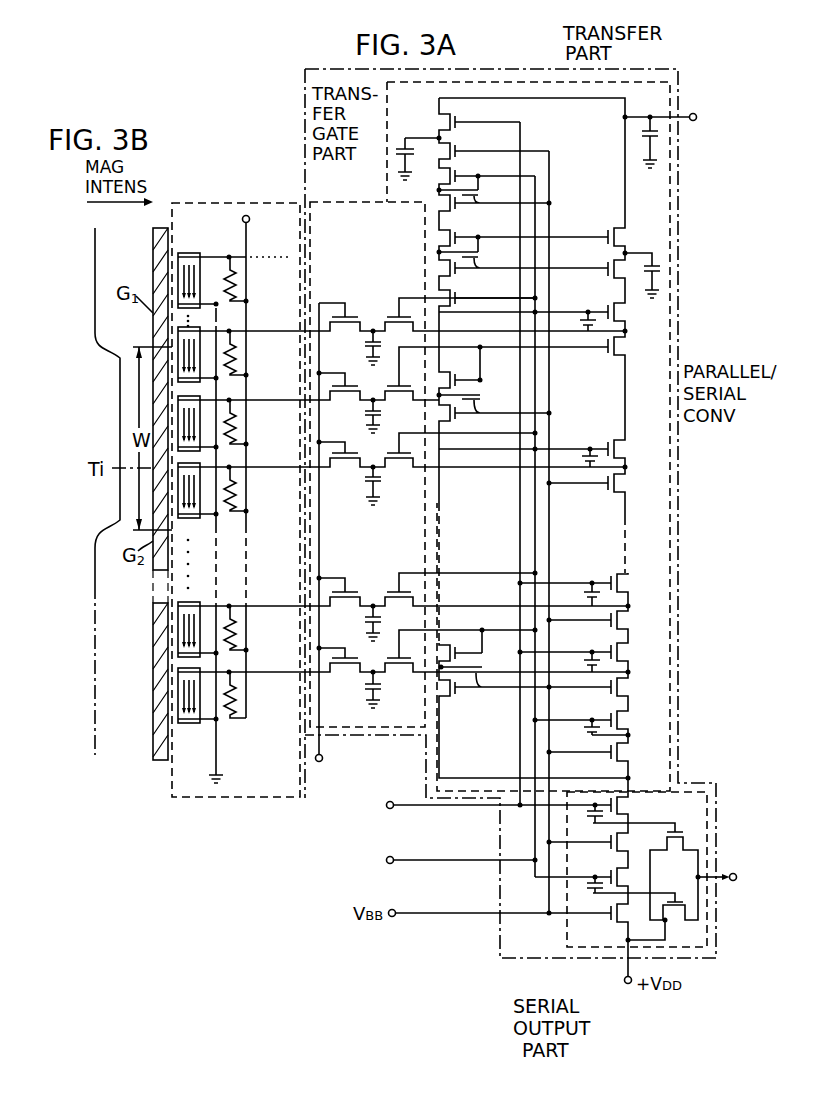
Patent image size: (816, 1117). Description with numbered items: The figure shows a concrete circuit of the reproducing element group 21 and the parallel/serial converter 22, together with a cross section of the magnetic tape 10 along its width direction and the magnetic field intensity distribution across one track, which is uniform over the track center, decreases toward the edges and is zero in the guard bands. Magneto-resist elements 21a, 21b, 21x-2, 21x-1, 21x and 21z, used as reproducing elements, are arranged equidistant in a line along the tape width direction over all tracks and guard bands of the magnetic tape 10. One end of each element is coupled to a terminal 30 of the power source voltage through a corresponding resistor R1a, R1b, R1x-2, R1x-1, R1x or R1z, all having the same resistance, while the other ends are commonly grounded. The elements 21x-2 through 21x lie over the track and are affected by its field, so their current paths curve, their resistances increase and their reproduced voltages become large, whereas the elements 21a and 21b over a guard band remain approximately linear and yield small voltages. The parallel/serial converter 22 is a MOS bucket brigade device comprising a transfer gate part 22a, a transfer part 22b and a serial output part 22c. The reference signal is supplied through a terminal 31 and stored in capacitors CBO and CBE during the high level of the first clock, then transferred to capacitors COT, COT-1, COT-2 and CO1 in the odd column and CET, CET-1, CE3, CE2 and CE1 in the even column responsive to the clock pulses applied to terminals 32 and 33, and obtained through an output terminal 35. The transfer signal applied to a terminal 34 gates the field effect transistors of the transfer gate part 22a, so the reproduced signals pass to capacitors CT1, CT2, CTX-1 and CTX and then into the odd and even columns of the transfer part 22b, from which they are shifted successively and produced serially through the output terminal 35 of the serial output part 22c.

In FIG. 3B, the magnetic tape 10 is at (156, 729).
In FIG. 3B, the reproducing element group 21 is at (209, 202).
In FIG. 3B, the MR element 21z is at (190, 252).
In FIG. 3B, the MR element 21x is at (218, 380).
In FIG. 3B, the MR element 21x-1 is at (218, 449).
In FIG. 3B, the MR element 21x-2 is at (218, 516).
In FIG. 3B, the MR element 21b is at (220, 656).
In FIG. 3B, the MR element 21a is at (203, 714).
In FIG. 3B, the terminal 30 is at (249, 214).
In FIG. 3A, the terminal 31 is at (693, 113).
In FIG. 3A, the terminal 32 is at (393, 808).
In FIG. 3A, the terminal 33 is at (393, 863).
In FIG. 3A, the terminal 34 is at (323, 757).
In FIG. 3A, the output terminal 35 is at (733, 868).
In FIG. 3A, the parallel/serial converter 22 is at (680, 305).
In FIG. 3A, the transfer gate part 22a is at (373, 200).
In FIG. 3A, the transfer part 22b is at (517, 78).
In FIG. 3A, the serial output part 22c is at (588, 952).
In FIG. 3B, the resistor R1z is at (237, 283).
In FIG. 3B, the resistor R1x is at (237, 353).
In FIG. 3B, the resistor R1x-1 is at (237, 421).
In FIG. 3B, the resistor R1x-2 is at (237, 490).
In FIG. 3B, the resistor R1b is at (237, 628).
In FIG. 3B, the resistor R1a is at (237, 696).
In FIG. 3A, the capacitor CTX is at (354, 347).
In FIG. 3A, the capacitor CTX-1 is at (351, 416).
In FIG. 3A, the capacitor CT2 is at (355, 623).
In FIG. 3A, the capacitor CT1 is at (355, 689).
In FIG. 3A, the capacitor CBO is at (417, 147).
In FIG. 3A, the capacitor CBE is at (660, 262).
In FIG. 3A, the capacitor COT is at (478, 196).
In FIG. 3A, the capacitor COT-1 is at (478, 259).
In FIG. 3A, the capacitor COT-2 is at (480, 401).
In FIG. 3A, the capacitor CO1 is at (480, 674).
In FIG. 3A, the capacitor CET is at (580, 314).
In FIG. 3A, the capacitor CET-1 is at (582, 451).
In FIG. 3A, the capacitor CE3 is at (586, 589).
In FIG. 3A, the capacitor CE2 is at (586, 661).
In FIG. 3A, the capacitor CE1 is at (586, 729).